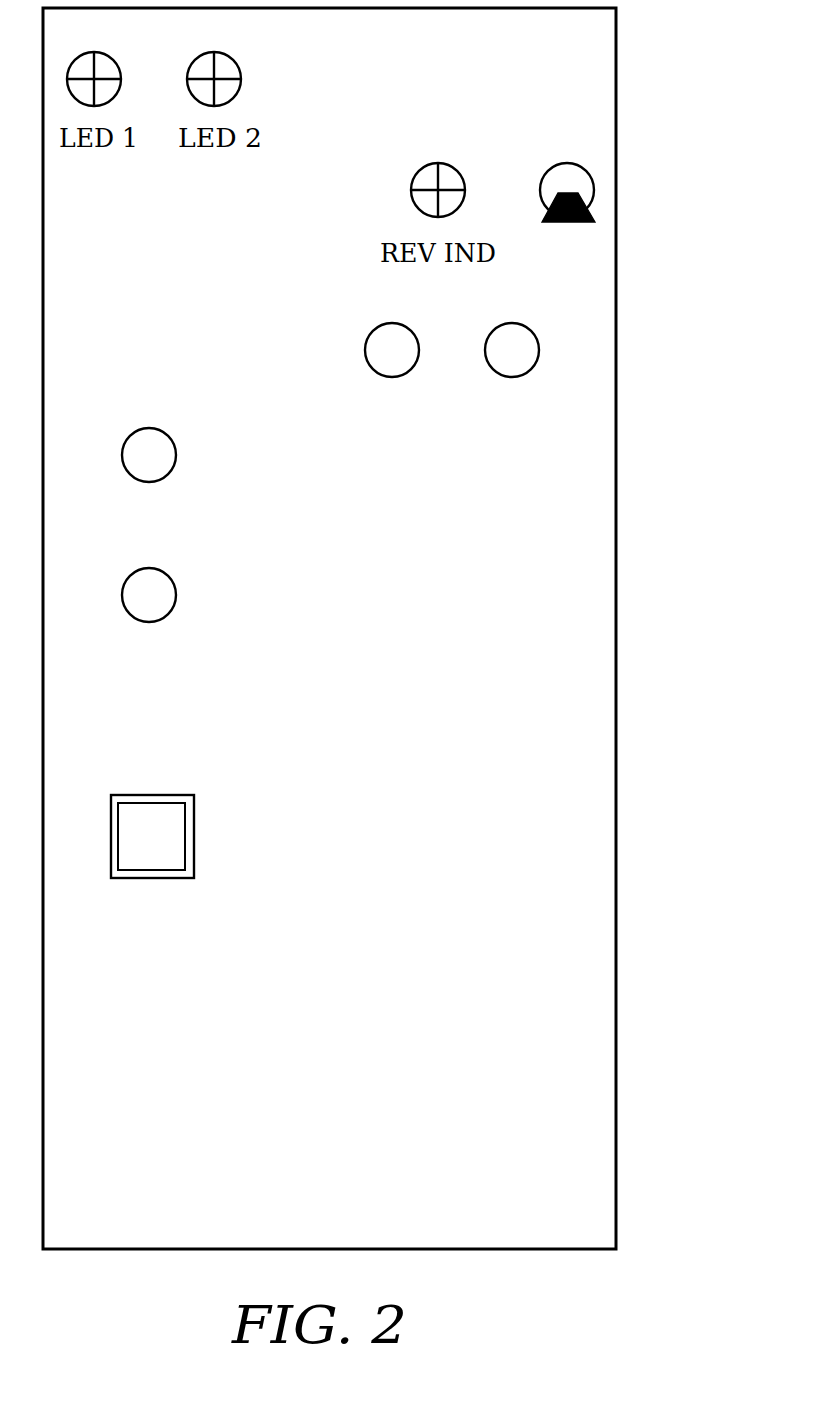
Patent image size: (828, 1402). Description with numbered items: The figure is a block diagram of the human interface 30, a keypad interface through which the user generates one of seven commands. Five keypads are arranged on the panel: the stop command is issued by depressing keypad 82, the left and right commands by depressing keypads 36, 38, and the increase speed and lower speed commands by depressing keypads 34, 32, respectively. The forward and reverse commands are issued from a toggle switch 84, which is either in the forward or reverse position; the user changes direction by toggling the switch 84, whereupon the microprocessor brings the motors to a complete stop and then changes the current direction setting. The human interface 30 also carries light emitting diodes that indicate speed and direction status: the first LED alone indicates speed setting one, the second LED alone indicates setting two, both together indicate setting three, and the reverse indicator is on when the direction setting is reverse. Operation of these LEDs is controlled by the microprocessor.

The human interface 30 is at (616, 790).
The keypad 32 is at (175, 613).
The keypad 34 is at (177, 462).
The keypad 36 is at (372, 330).
The keypad 38 is at (539, 350).
The keypad 82 is at (195, 842).
The toggle switch 84 is at (540, 188).